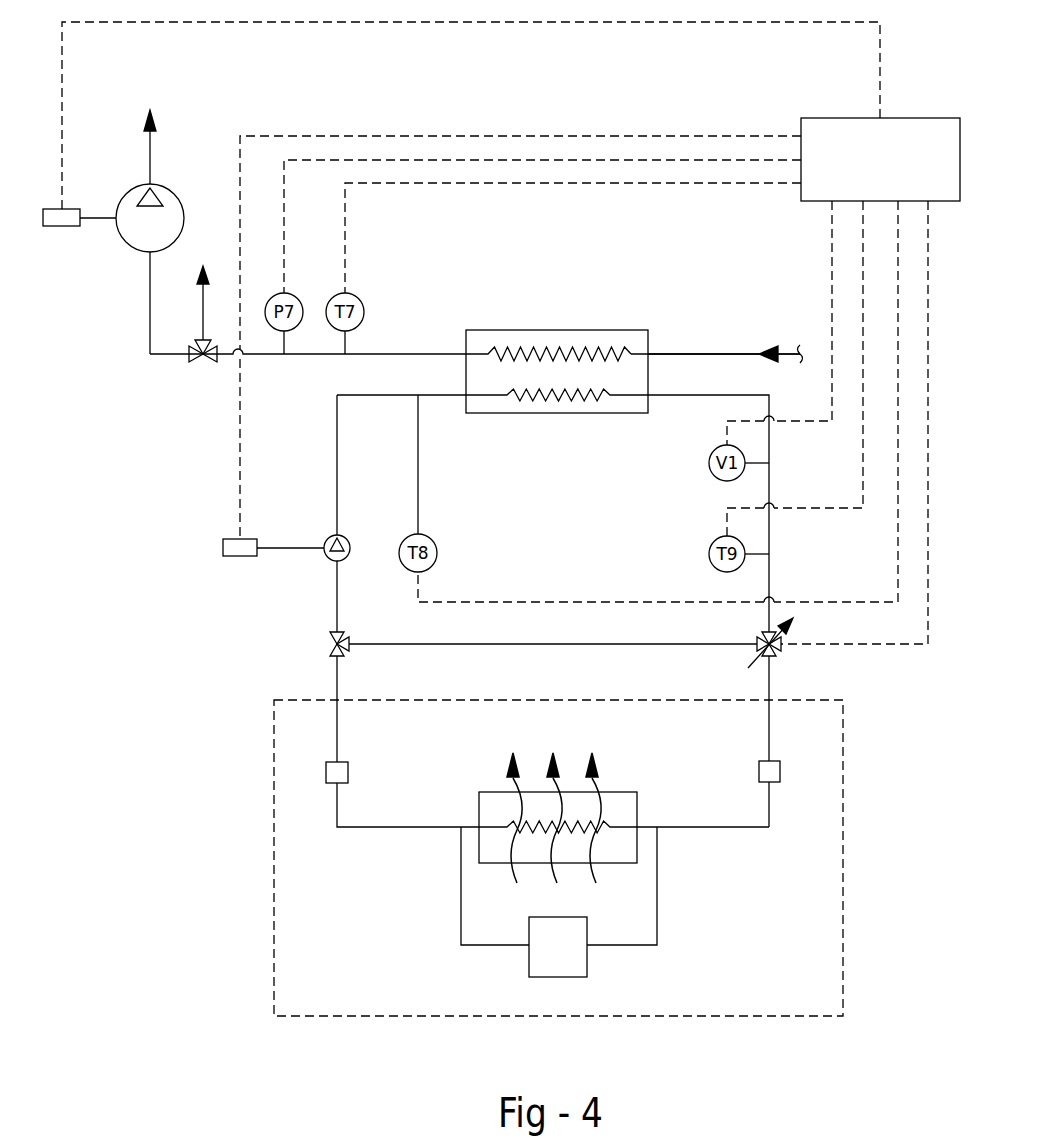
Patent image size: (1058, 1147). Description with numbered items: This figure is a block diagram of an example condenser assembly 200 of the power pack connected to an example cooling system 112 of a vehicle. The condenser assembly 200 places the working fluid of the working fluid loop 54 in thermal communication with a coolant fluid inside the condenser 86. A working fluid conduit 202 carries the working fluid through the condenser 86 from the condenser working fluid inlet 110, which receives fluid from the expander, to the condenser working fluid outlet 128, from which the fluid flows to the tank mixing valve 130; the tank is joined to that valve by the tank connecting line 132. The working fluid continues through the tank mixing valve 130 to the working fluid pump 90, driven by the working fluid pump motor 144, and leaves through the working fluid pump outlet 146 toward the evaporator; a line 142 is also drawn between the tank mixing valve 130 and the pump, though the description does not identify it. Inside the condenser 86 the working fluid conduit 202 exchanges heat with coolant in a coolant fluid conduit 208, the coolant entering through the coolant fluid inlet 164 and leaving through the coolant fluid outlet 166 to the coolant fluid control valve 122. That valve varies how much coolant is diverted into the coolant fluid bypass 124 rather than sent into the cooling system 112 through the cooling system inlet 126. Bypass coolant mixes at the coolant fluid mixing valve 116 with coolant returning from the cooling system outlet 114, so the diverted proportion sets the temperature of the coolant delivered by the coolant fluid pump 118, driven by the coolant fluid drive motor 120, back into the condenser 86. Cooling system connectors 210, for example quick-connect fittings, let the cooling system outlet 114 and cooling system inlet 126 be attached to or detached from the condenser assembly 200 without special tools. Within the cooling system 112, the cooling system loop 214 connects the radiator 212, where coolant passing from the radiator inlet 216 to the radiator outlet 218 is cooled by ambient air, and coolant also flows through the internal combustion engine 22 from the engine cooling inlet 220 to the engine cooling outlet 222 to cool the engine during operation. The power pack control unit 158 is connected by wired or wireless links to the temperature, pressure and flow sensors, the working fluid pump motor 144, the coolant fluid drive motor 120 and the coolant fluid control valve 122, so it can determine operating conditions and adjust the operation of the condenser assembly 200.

The internal combustion engine 22 is at (548, 963).
The working fluid loop 54 is at (721, 338).
The condenser 86 is at (563, 330).
The working fluid pump 90 is at (170, 205).
The condenser working fluid inlet 110 is at (678, 352).
The cooling system 112 is at (268, 978).
The cooling system outlet 114 is at (337, 677).
The coolant fluid mixing valve 116 is at (328, 644).
The coolant fluid pump 118 is at (325, 556).
The coolant fluid drive motor 120 is at (223, 548).
The coolant fluid control valve 122 is at (778, 652).
The coolant fluid bypass 124 is at (419, 645).
The cooling system inlet 126 is at (769, 718).
The condenser working fluid outlet 128 is at (410, 354).
The tank mixing valve 130 is at (199, 364).
The tank connecting line 132 is at (208, 302).
The compressor suction line 142 is at (150, 325).
The working fluid pump motor 144 is at (62, 227).
The working fluid pump outlet 146 is at (148, 146).
The power pack control unit 158 is at (823, 130).
The coolant fluid inlet 164 is at (440, 395).
The coolant fluid outlet 166 is at (675, 395).
The condenser assembly 200 is at (200, 474).
The working fluid conduit 202 is at (478, 354).
The coolant fluid conduit 208 is at (485, 394).
The cooling system connectors 210 is at (340, 764).
The radiator 212 is at (628, 812).
The cooling system loop 214 is at (356, 838).
The radiator inlet 216 is at (705, 830).
The radiator outlet 218 is at (388, 828).
The engine cooling inlet 220 is at (461, 900).
The engine cooling outlet 222 is at (622, 945).